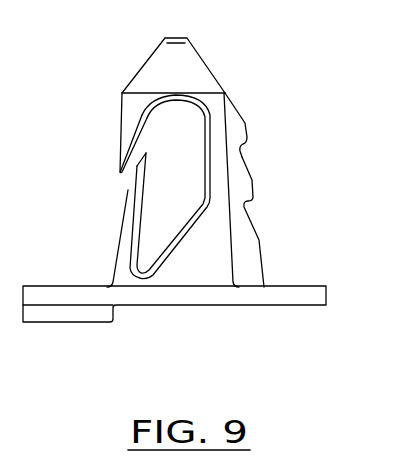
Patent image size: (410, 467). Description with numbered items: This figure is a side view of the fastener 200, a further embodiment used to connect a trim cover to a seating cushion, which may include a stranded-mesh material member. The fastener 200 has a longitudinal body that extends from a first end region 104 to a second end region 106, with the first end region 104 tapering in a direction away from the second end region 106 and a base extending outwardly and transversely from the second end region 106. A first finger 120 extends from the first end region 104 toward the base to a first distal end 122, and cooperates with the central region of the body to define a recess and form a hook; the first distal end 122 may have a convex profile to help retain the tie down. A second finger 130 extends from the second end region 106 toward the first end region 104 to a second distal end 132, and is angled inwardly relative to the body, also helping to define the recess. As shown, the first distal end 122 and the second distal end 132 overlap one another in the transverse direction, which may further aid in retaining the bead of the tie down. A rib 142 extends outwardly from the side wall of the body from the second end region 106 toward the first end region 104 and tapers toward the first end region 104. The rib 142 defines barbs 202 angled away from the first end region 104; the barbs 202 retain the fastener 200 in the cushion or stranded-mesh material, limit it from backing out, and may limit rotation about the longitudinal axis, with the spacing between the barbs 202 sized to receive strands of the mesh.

The fastener 200 is at (324, 77).
The first end region 104 is at (123, 61).
The first finger 120 is at (130, 120).
The first distal end 122 is at (118, 172).
The second finger 130 is at (125, 252).
The second distal end 132 is at (147, 162).
The rib 142 is at (246, 137).
The barb 202 is at (262, 163).
The second end region 106 is at (276, 271).